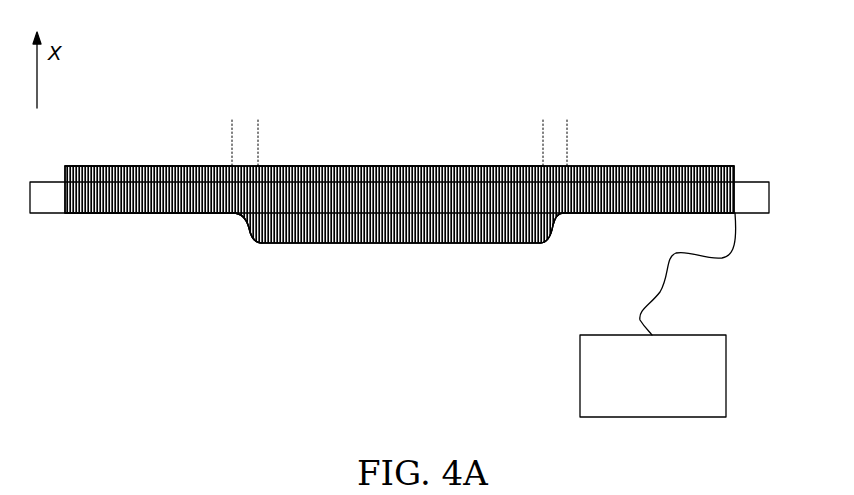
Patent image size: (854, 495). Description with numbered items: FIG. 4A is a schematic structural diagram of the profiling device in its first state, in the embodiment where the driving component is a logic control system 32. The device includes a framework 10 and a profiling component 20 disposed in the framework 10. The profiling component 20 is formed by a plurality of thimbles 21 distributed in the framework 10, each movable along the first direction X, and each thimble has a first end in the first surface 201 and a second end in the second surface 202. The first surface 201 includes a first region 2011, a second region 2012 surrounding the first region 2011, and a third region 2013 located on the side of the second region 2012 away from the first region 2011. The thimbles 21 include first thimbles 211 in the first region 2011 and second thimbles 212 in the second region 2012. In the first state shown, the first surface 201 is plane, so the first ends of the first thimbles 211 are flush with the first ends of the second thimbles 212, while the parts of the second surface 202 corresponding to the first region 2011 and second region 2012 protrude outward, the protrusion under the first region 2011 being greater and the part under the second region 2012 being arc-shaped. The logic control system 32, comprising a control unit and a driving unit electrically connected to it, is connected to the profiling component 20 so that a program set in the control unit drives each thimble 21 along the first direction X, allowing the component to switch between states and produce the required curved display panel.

The framework 10 is at (752, 181).
The profiling component 20 is at (733, 169).
The thimbles 21 is at (708, 167).
The first surface 201 is at (137, 165).
The second surface 202 is at (140, 215).
The first region 2011 is at (388, 142).
The second region 2012 is at (247, 132).
The third region 2013 is at (197, 137).
The first thimbles 211 is at (399, 205).
The second thimbles 212 is at (554, 217).
The logic control system 32 is at (703, 335).